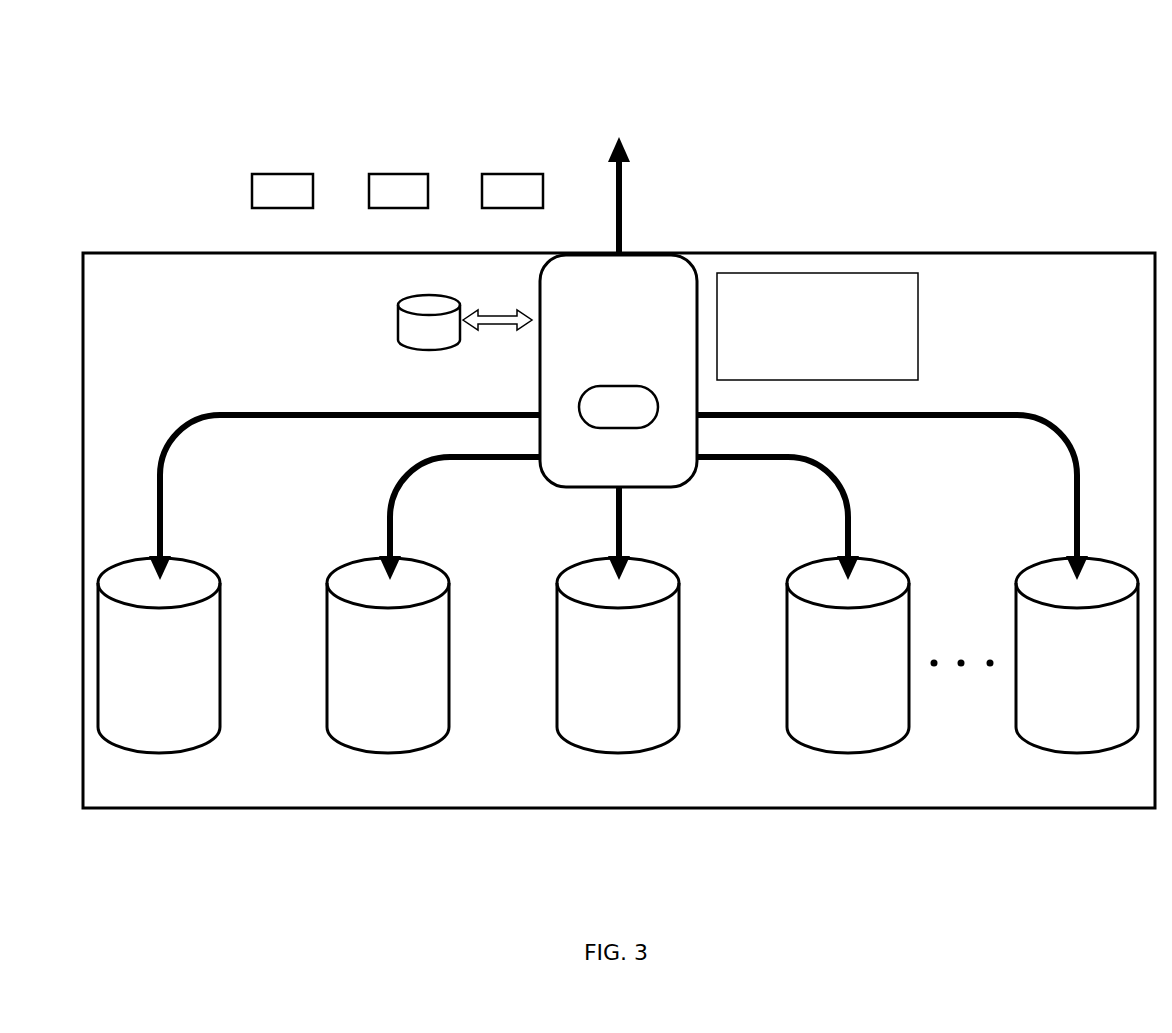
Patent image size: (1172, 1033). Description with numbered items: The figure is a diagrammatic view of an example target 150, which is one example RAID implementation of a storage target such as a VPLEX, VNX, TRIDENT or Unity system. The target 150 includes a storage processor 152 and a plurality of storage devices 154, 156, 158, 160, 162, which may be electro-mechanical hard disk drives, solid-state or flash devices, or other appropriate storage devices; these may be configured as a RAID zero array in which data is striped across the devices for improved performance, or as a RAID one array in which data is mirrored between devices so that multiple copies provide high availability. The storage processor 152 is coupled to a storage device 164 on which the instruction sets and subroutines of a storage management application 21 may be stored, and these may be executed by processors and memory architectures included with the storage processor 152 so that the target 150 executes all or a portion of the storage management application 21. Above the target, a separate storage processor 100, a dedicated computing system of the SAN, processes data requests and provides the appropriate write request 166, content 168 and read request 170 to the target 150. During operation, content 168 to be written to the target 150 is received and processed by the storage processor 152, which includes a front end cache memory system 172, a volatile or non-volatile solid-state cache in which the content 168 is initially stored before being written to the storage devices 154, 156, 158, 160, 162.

The storage management application 21 is at (918, 340).
The storage processor 100 is at (619, 148).
The target 150 is at (619, 530).
The storage processor 152 is at (618, 371).
The storage device 154 is at (319, 584).
The storage device 156 is at (433, 605).
The storage device 158 is at (618, 620).
The storage device 160 is at (803, 605).
The storage device 162 is at (917, 584).
The storage device 164 is at (465, 322).
The write request 166 is at (252, 199).
The content 168 is at (369, 199).
The read request 170 is at (482, 199).
The cache memory system 172 is at (618, 407).